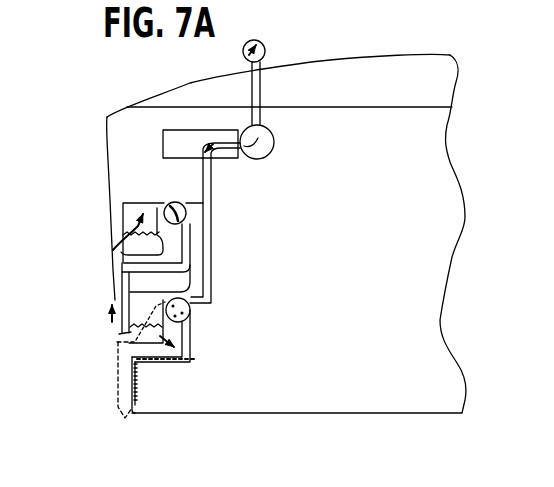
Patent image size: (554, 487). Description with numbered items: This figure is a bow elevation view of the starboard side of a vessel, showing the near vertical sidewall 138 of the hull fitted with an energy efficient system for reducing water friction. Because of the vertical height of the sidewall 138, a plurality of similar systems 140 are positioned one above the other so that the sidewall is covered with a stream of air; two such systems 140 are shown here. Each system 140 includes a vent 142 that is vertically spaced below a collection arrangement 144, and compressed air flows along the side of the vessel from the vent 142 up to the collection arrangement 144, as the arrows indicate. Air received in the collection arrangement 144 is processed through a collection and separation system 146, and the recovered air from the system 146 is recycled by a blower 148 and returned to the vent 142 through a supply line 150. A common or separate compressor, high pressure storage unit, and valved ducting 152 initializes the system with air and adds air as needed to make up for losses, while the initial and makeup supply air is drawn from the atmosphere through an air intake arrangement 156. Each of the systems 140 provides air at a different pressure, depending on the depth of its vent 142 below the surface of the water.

The sidewall 138 is at (108, 142).
The system 140 is at (220, 232).
The vent 142 is at (112, 313).
The collection arrangement 144 is at (116, 251).
The collection and separation system 146 is at (114, 264).
The blower 148 is at (185, 197).
The supply line 150 is at (130, 291).
The valved ducting 152 is at (242, 166).
The air intake arrangement 156 is at (256, 40).